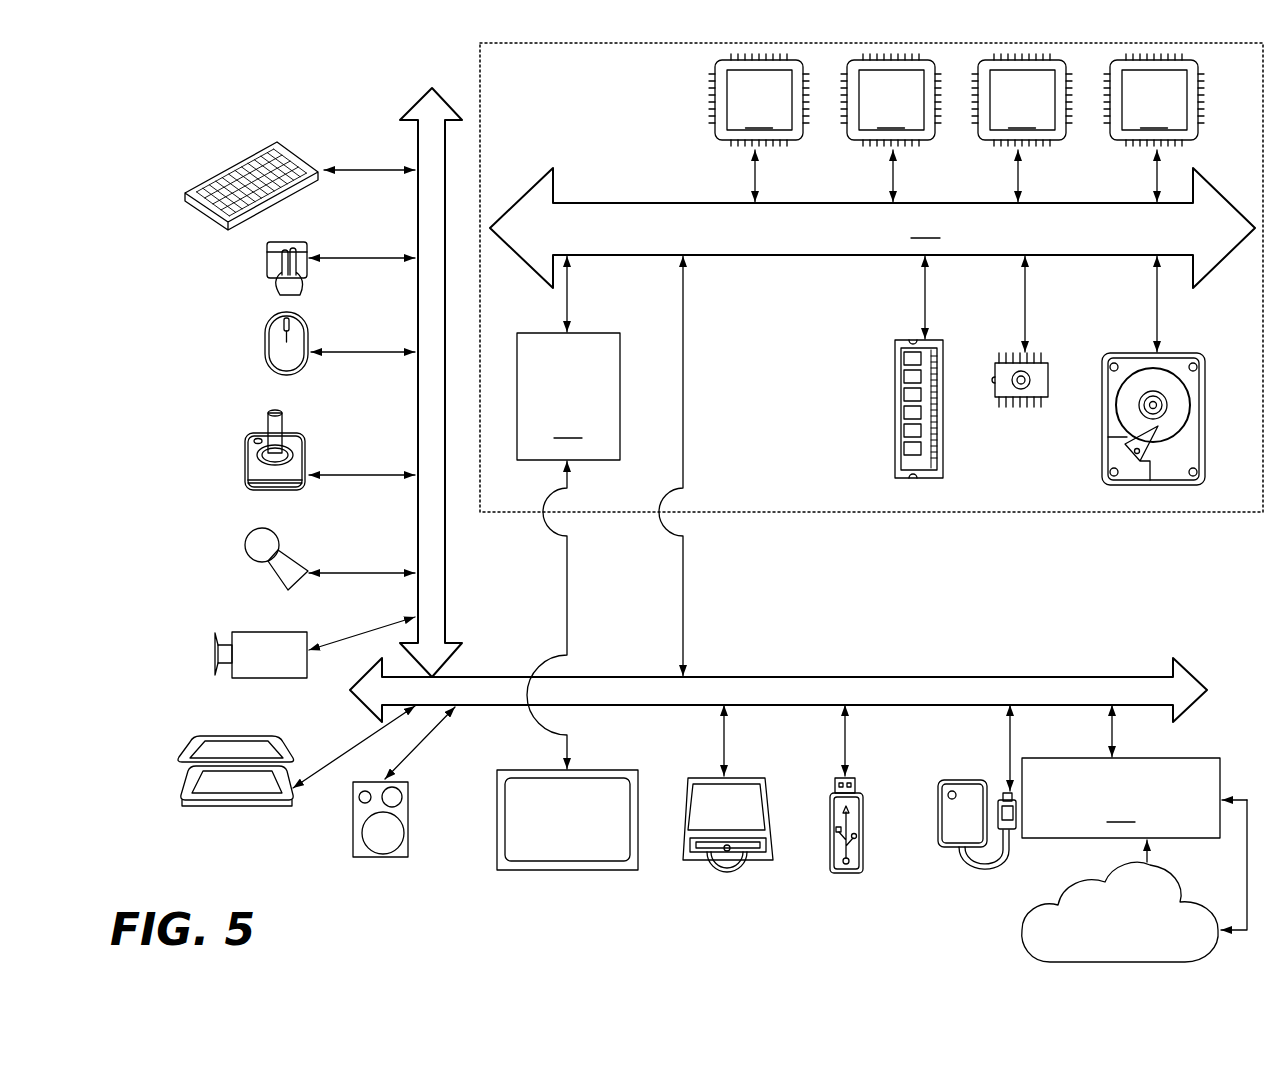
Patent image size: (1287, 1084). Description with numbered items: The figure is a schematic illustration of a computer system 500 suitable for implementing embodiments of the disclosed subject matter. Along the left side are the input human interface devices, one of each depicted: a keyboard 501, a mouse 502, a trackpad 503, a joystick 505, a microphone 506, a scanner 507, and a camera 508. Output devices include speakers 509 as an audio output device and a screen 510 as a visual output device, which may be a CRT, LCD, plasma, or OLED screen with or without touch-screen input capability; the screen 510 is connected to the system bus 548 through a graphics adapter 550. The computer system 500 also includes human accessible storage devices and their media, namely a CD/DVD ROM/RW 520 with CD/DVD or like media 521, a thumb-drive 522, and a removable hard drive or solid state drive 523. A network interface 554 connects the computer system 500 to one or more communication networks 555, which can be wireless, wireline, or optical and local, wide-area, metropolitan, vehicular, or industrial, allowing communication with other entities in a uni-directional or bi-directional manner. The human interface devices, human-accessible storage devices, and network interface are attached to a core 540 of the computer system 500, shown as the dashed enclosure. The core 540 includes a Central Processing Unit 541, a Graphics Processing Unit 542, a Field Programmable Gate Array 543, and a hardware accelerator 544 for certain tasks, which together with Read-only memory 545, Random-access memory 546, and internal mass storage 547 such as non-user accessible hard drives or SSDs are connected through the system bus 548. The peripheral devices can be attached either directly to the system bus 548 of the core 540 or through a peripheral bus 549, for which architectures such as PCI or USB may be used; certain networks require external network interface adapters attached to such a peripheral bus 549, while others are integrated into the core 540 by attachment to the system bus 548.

The computer system 500 is at (143, 95).
The keyboard 501 is at (183, 196).
The mouse 502 is at (265, 343).
The trackpad 503 is at (267, 260).
The joystick 505 is at (245, 473).
The microphone 506 is at (247, 545).
The scanner 507 is at (182, 792).
The camera 508 is at (215, 655).
The speakers 509 is at (380, 858).
The screen 510 is at (567, 872).
The CD/DVD ROM/RW 520 is at (769, 862).
The CD/DVD media 521 is at (710, 869).
The thumb-drive 522 is at (846, 876).
The removable hard drive or solid state drive 523 is at (950, 849).
The core 540 is at (862, 514).
The Central Processing Unit (CPU) 541 is at (759, 128).
The Graphics Processing Unit (GPU) 542 is at (891, 128).
The Field Programmable Gate Array (FPGA) 543 is at (1022, 128).
The hardware accelerator 544 is at (1154, 128).
The Read-only memory (ROM) 545 is at (1018, 408).
The Random-access memory 546 is at (893, 430).
The internal mass storage 547 is at (1115, 353).
The system bus 548 is at (872, 228).
The peripheral bus 549 is at (416, 133).
The graphics adapter 550 is at (568, 512).
The network interface 554 is at (1134, 817).
The communication networks 555 is at (1022, 935).